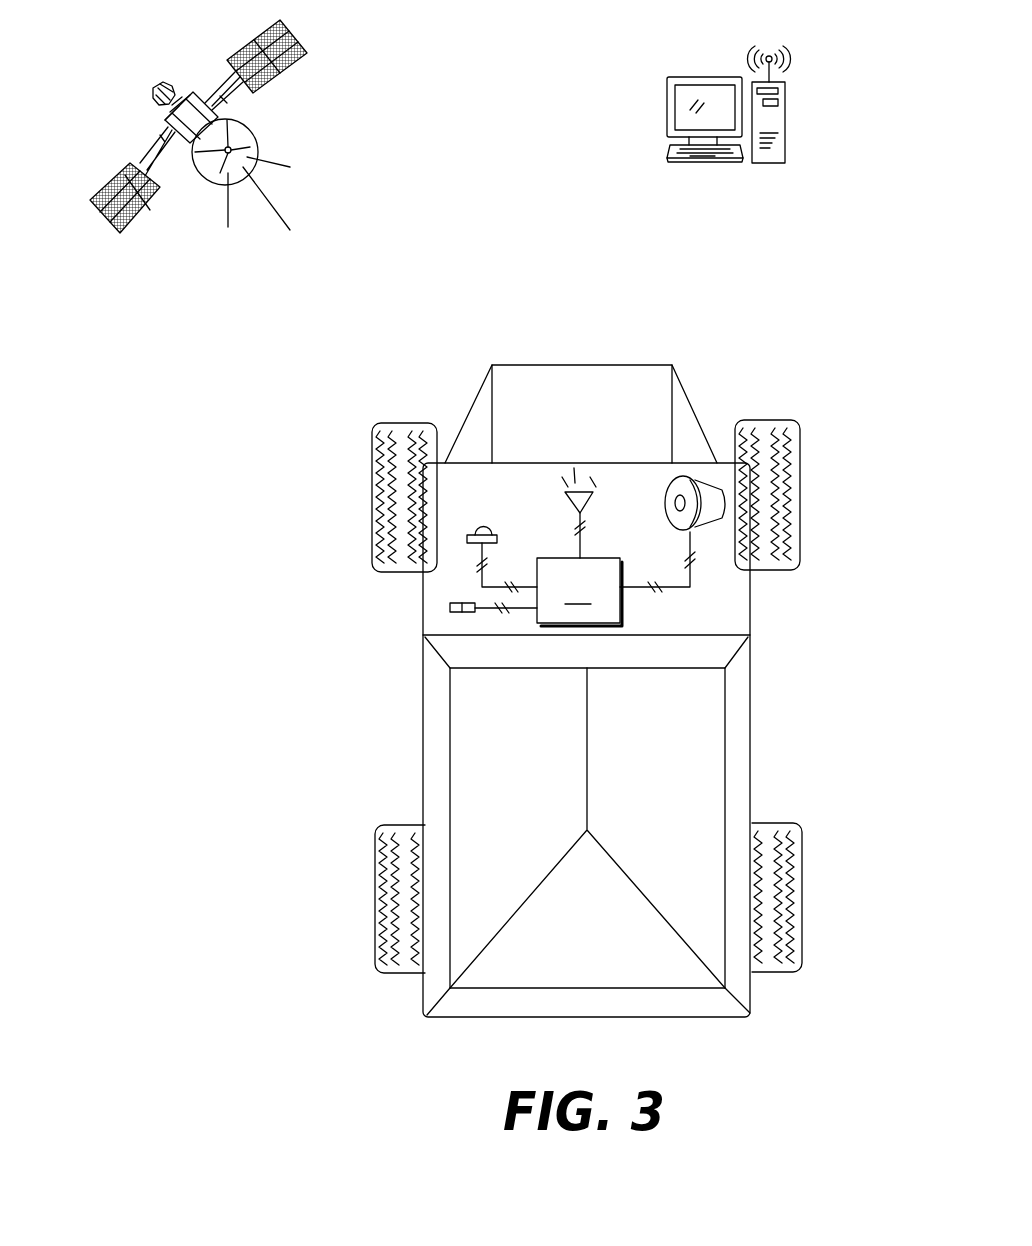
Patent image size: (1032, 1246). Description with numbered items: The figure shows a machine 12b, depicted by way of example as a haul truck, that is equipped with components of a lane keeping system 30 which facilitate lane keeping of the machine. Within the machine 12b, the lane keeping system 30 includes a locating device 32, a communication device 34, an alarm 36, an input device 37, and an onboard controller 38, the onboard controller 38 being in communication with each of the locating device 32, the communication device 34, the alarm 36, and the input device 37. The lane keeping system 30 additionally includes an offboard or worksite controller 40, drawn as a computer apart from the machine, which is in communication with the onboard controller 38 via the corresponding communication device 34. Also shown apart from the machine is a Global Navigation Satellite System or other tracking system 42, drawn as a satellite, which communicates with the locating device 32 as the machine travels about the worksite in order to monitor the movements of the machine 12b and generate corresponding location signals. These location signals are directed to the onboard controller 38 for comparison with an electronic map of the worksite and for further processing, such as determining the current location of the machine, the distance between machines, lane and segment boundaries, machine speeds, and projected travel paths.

The machine 12b is at (765, 335).
The lane keeping system 30 is at (235, 489).
The locating device 32 is at (475, 527).
The communication device 34 is at (566, 493).
The alarm 36 is at (693, 532).
The input device 37 is at (450, 607).
The onboard controller 38 is at (579, 592).
The worksite controller 40 is at (650, 84).
The tracking system 42 is at (310, 122).